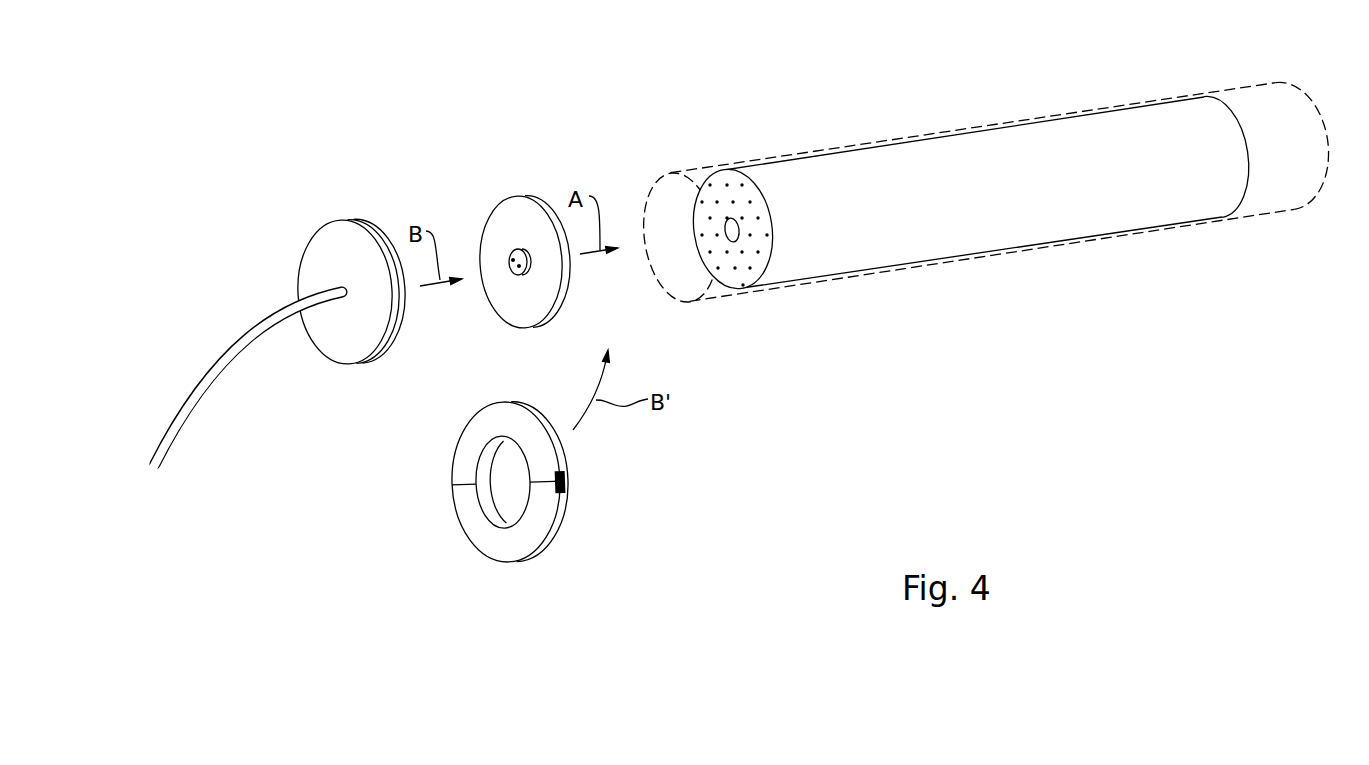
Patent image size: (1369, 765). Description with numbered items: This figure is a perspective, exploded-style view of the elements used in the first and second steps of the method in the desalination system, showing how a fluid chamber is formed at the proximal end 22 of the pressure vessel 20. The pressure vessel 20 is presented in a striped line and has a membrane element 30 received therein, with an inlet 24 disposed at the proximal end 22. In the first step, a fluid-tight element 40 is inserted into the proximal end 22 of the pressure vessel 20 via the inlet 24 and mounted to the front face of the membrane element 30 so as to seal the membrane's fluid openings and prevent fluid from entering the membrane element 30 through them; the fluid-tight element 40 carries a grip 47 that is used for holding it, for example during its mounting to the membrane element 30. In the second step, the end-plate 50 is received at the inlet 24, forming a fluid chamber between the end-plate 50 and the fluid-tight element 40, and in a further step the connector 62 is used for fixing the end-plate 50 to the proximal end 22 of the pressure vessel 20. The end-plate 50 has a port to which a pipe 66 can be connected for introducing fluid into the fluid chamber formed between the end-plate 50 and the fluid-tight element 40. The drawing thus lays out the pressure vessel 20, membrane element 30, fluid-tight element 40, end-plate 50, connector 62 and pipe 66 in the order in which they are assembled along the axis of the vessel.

The pressure vessel 20 is at (1277, 82).
The proximal end 22 is at (685, 172).
The inlet 24 is at (650, 190).
The membrane element 30 is at (958, 145).
The fluid-tight element 40 is at (520, 197).
The grip 47 is at (510, 273).
The end-plate 50 is at (322, 242).
The connector 62 is at (462, 463).
The pipe 66 is at (222, 337).